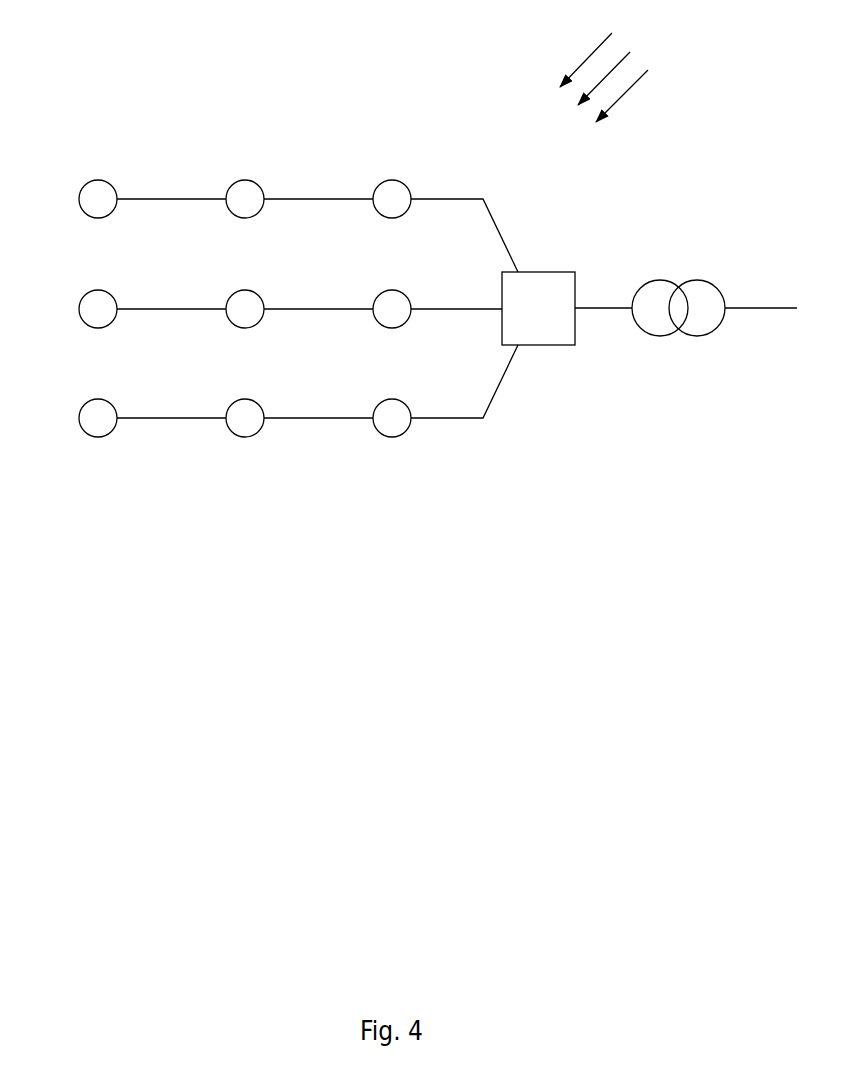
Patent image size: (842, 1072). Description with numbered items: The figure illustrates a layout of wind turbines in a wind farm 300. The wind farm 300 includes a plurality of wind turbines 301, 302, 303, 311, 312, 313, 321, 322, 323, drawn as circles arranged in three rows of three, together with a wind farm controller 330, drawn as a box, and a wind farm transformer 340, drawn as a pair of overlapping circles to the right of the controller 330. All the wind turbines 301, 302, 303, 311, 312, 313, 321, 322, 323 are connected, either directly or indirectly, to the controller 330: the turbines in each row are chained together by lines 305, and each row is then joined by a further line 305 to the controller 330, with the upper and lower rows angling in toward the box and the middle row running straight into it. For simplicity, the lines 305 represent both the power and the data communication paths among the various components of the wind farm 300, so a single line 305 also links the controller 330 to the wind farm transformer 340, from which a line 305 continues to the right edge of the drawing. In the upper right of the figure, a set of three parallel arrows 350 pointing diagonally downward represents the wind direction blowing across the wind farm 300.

The wind farm 300 is at (60, 84).
The wind turbine 301 is at (406, 185).
The wind turbine 302 is at (259, 185).
The wind turbine 303 is at (112, 185).
The wind turbine 311 is at (406, 295).
The wind turbine 312 is at (259, 295).
The wind turbine 313 is at (112, 295).
The wind turbine 321 is at (406, 404).
The wind turbine 322 is at (259, 404).
The wind turbine 323 is at (112, 404).
The lines 305 is at (492, 212).
The wind farm controller 330 is at (552, 345).
The wind farm transformer 340 is at (680, 335).
The arrows 350 is at (621, 80).